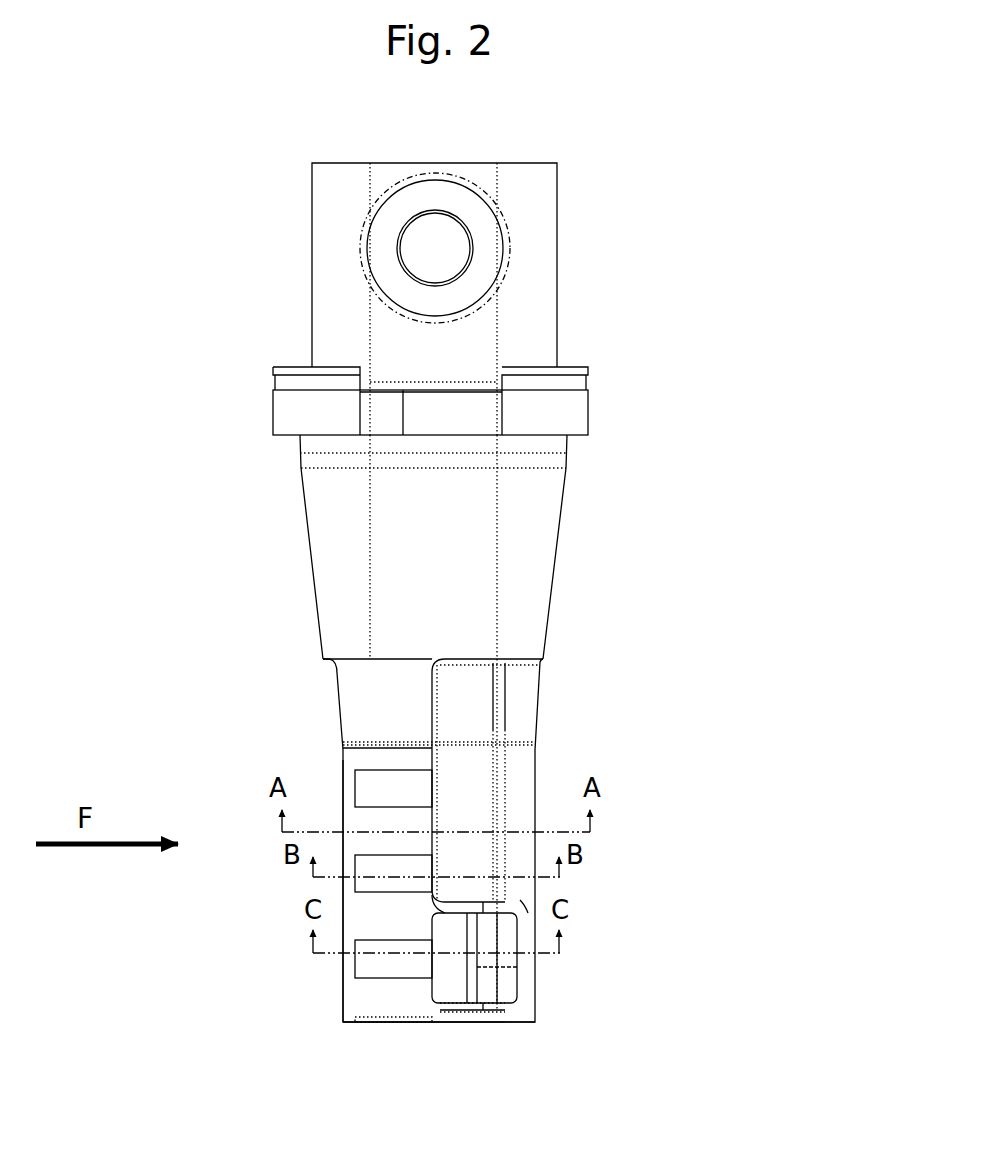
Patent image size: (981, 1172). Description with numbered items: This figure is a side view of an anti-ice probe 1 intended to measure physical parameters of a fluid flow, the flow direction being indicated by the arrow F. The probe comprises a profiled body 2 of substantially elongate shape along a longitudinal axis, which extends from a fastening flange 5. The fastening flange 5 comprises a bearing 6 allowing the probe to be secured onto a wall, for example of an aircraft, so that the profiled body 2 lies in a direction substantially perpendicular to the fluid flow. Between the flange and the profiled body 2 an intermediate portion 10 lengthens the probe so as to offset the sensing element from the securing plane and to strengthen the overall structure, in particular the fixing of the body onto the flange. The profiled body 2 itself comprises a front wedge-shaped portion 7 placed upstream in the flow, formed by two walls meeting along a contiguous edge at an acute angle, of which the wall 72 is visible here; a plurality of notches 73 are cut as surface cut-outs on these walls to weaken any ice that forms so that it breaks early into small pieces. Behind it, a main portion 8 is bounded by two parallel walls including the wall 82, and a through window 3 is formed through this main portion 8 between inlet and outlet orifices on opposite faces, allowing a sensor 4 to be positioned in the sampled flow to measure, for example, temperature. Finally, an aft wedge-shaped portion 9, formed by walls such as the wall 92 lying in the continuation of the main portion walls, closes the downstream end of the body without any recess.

The anti-ice probe 1 is at (181, 457).
The profiled body 2 is at (235, 769).
The through window 3 is at (487, 992).
The sensor 4 is at (473, 967).
The fastening flange 5 is at (603, 302).
The bearing 6 is at (560, 413).
The wedge-shaped portion 7 is at (391, 1034).
The main portion 8 is at (471, 1034).
The aft wedge-shaped portion 9 is at (528, 1024).
The intermediate portion 10 is at (508, 582).
The wall 72 is at (382, 997).
The notches 73 is at (382, 967).
The wall 82 is at (467, 697).
The wall 92 is at (520, 900).